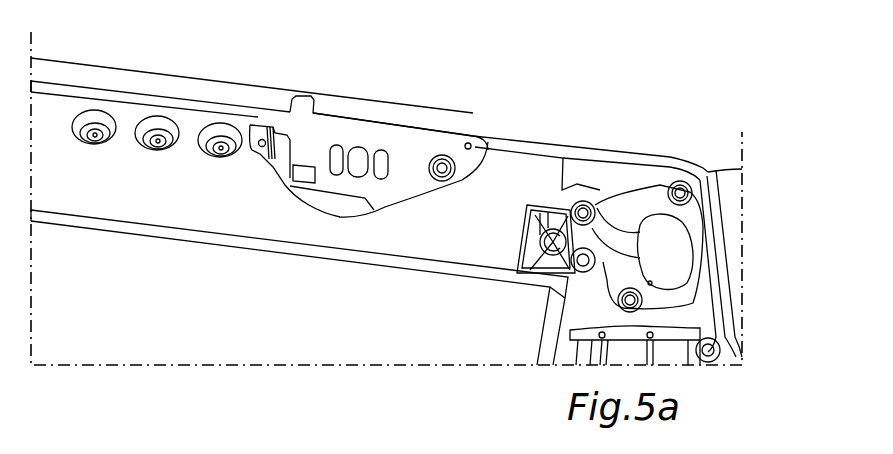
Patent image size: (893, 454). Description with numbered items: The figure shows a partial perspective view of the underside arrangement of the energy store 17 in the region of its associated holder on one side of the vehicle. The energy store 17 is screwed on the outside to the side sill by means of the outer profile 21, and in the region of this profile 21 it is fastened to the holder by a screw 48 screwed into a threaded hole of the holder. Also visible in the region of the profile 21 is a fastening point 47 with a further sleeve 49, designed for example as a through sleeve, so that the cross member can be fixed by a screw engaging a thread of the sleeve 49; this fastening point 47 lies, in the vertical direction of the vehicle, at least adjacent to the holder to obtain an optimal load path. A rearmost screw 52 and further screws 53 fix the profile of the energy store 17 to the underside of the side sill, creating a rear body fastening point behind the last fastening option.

The energy store 17 is at (299, 287).
The profile 21 is at (515, 180).
The fastening point 47 is at (603, 263).
The screw 48 is at (578, 204).
The sleeve 49 is at (601, 245).
The rearmost screw 52 is at (448, 158).
The screws 53 is at (228, 142).